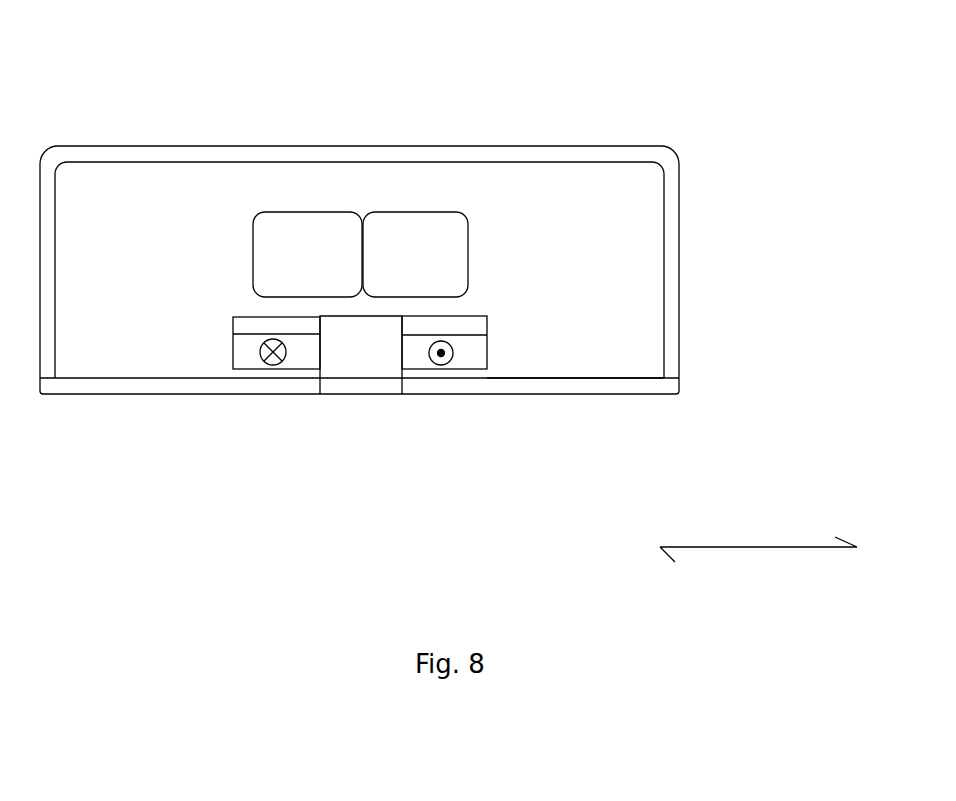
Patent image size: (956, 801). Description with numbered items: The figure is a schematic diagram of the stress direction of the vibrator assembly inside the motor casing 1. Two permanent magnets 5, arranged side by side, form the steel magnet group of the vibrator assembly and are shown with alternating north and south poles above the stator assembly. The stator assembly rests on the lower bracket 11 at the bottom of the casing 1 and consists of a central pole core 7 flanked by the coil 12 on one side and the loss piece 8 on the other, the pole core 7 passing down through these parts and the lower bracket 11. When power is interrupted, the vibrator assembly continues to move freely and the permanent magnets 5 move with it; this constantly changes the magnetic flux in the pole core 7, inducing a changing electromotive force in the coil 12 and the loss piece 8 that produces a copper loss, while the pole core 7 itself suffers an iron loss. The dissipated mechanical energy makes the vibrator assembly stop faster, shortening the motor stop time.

The casing 1 is at (188, 158).
The permanent magnet 5 is at (445, 243).
The pole core 7 is at (352, 352).
The loss piece 8 is at (458, 323).
The lower bracket 11 is at (528, 387).
The coil 12 is at (244, 352).